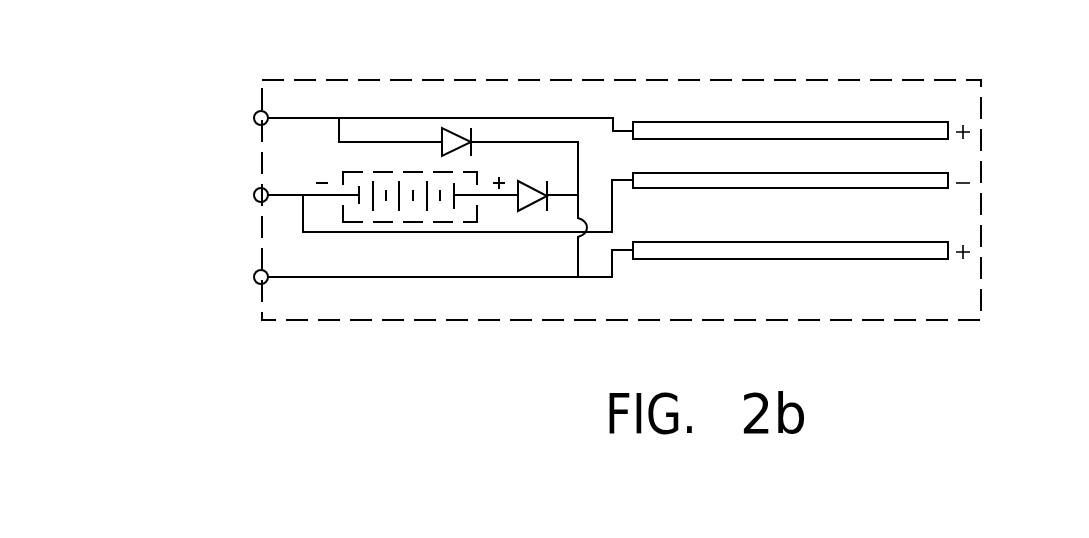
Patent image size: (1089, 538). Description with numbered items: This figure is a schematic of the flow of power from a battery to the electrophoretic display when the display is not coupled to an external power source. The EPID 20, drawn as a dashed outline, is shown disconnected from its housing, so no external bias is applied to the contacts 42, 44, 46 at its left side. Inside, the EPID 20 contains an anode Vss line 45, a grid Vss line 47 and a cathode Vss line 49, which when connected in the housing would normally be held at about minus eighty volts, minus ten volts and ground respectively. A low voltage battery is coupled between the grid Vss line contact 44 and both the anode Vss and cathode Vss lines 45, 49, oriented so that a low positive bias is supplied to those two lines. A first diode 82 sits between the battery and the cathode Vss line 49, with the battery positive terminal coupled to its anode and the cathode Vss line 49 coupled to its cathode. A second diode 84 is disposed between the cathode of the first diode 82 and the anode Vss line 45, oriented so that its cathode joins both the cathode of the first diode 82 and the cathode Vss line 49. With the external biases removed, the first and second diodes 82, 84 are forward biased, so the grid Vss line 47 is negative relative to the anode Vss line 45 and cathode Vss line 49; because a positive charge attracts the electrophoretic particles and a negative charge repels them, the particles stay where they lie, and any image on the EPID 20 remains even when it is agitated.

The EPID 20 is at (756, 74).
The contact 42 is at (255, 113).
The grid Vss line contact 44 is at (255, 191).
The contact 46 is at (255, 271).
The anode Vss line 45 is at (948, 123).
The grid Vss line 47 is at (948, 175).
The cathode Vss line 49 is at (948, 243).
The first diode 82 is at (533, 200).
The second diode 84 is at (452, 126).